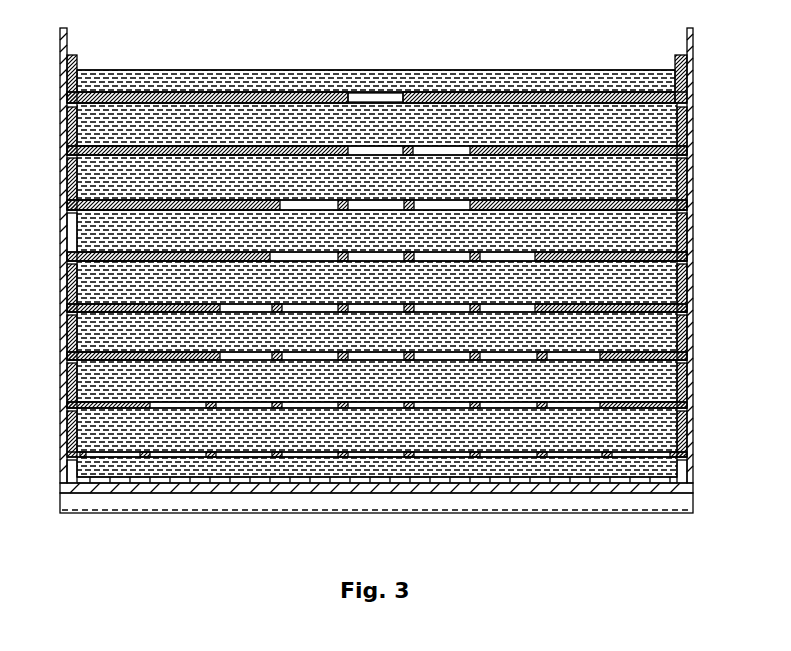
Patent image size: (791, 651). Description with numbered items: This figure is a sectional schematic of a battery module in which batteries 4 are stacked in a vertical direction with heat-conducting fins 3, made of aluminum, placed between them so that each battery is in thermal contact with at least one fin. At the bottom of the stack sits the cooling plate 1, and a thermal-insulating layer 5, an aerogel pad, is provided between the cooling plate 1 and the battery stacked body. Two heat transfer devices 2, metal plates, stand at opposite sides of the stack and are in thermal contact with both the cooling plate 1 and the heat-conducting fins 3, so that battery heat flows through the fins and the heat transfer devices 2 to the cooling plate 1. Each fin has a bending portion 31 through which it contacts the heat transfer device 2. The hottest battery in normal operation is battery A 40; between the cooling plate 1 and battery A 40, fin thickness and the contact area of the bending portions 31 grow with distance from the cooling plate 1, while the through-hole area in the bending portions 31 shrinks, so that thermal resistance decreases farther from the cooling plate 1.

The cooling plate 1 is at (160, 502).
The heat transfer device 2 is at (62, 290).
The heat-conducting fin 3 is at (130, 92).
The bending portion 31 is at (675, 55).
The batteries 4 is at (503, 77).
The battery A 40 is at (330, 80).
The thermal-insulating layer 5 is at (78, 482).